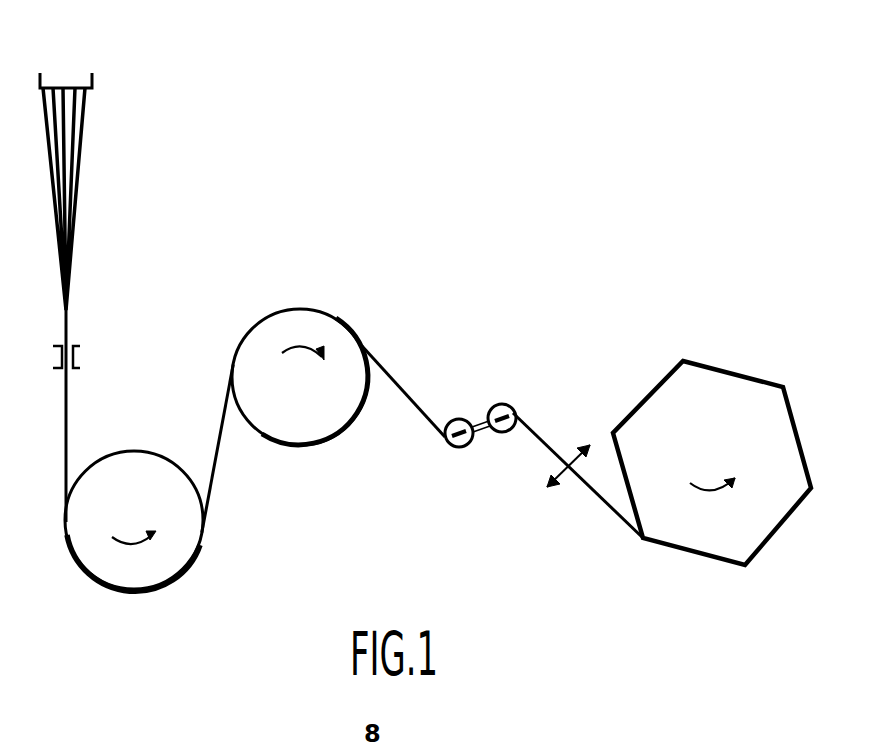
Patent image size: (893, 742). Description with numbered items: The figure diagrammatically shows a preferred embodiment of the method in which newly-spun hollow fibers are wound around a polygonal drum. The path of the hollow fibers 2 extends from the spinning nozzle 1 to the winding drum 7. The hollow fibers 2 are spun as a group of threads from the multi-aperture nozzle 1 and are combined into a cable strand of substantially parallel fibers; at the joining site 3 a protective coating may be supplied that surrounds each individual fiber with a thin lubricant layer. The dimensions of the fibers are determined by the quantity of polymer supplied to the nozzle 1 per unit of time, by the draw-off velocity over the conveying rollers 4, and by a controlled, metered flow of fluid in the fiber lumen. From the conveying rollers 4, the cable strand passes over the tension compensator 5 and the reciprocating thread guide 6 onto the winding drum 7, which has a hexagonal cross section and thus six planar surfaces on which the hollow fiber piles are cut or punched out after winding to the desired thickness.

The spinning nozzle 1 is at (78, 75).
The hollow fibers 2 is at (68, 155).
The joining site 3 is at (77, 360).
The conveying rollers 4 is at (317, 318).
The tension compensator 5 is at (482, 418).
The reciprocating thread guide 6 is at (565, 477).
The winding drum 7 is at (725, 378).